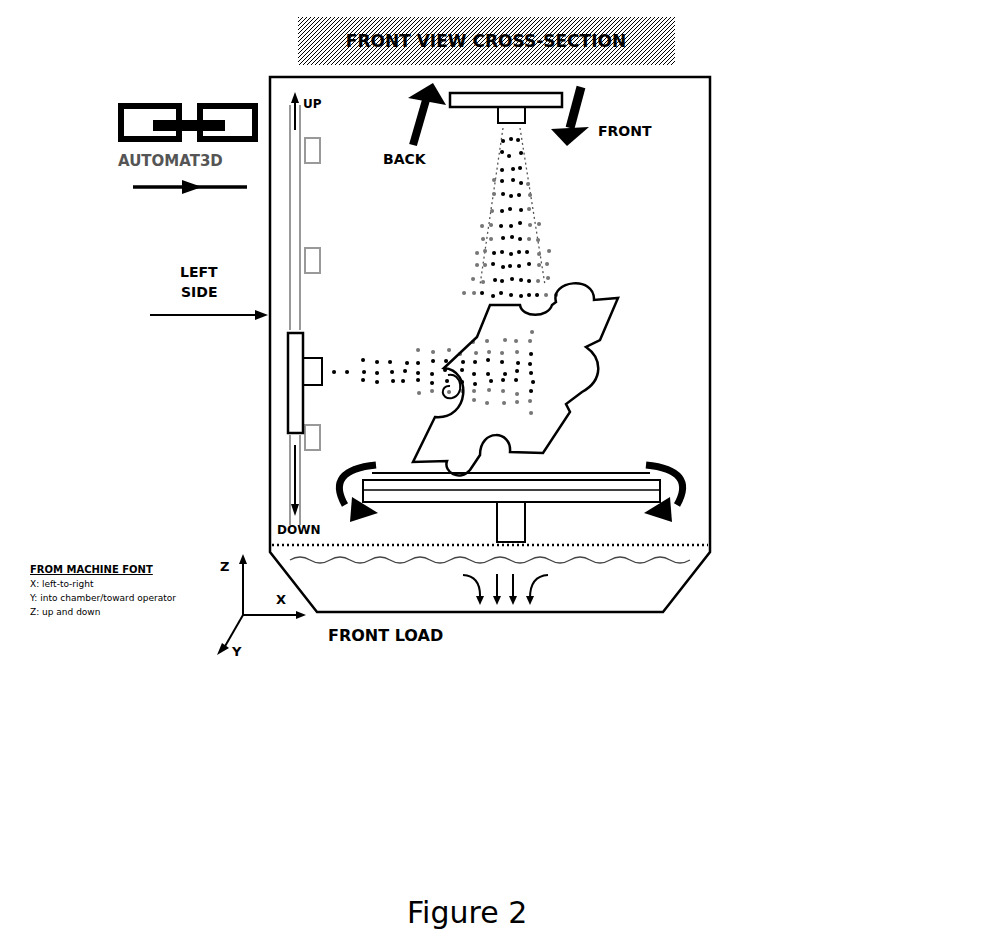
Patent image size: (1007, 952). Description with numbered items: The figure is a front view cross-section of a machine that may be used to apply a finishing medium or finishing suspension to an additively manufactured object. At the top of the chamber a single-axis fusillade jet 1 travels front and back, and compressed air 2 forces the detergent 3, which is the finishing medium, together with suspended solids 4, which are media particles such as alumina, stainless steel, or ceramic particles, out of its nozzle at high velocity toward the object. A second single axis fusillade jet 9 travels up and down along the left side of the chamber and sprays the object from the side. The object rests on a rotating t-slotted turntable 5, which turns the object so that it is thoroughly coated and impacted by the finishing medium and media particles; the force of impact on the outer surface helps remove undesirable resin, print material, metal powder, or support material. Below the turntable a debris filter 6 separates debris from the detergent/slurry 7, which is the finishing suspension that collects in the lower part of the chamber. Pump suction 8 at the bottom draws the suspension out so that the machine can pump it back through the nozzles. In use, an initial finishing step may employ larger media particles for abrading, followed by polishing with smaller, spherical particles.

The single-axis fusillade jet 1 is at (565, 96).
The compressed air 2 is at (520, 154).
The detergent 3 is at (566, 212).
The suspended solids 4 is at (557, 262).
The rotating t-slotted turntable 5 is at (665, 468).
The debris filter 6 is at (660, 542).
The detergent/slurry 7 is at (658, 593).
The pump suction 8 is at (545, 588).
The single axis fusillade jet 9 is at (284, 360).